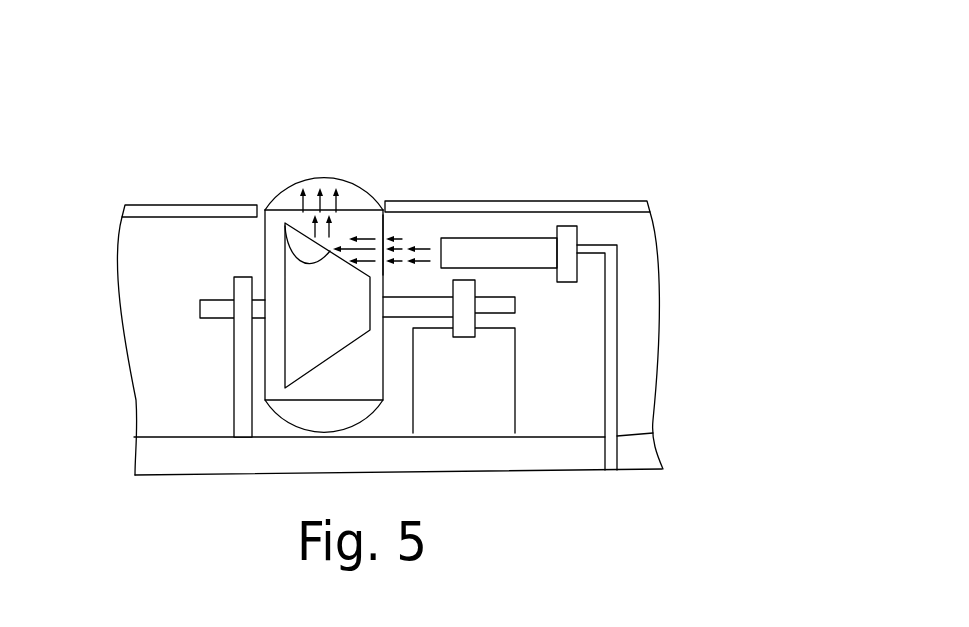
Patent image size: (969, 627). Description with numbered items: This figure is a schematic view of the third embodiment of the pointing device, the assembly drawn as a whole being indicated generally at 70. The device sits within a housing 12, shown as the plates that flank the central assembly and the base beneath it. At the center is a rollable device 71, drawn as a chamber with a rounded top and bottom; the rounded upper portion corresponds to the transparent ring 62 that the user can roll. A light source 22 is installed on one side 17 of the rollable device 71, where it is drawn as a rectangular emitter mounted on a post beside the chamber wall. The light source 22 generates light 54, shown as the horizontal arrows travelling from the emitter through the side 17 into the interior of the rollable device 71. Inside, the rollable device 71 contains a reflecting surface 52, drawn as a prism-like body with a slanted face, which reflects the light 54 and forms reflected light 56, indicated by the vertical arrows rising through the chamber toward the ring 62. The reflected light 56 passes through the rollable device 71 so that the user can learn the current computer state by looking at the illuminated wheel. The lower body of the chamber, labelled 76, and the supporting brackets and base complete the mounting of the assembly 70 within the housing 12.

The housing 12 is at (147, 212).
The side 17 is at (388, 223).
The light source 22 is at (513, 247).
The reflecting surface 52 is at (320, 261).
The light 54 is at (410, 248).
The reflected light 56 is at (300, 182).
The ring 62 is at (347, 185).
The optical sensor assembly 70 is at (503, 104).
The rollable device 71 is at (312, 165).
The chamber body 76 is at (277, 392).